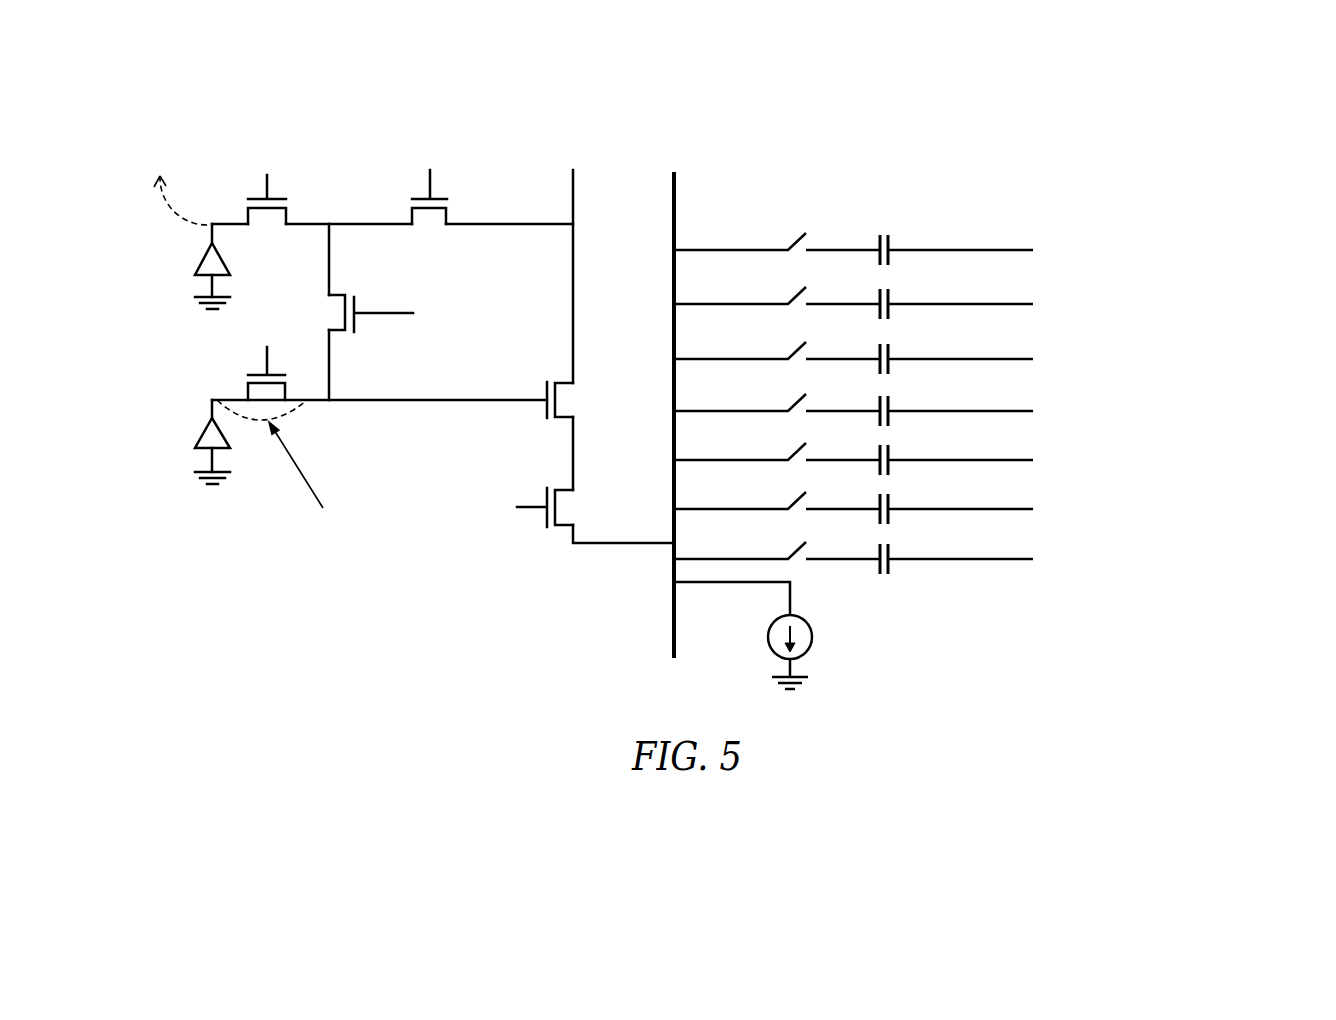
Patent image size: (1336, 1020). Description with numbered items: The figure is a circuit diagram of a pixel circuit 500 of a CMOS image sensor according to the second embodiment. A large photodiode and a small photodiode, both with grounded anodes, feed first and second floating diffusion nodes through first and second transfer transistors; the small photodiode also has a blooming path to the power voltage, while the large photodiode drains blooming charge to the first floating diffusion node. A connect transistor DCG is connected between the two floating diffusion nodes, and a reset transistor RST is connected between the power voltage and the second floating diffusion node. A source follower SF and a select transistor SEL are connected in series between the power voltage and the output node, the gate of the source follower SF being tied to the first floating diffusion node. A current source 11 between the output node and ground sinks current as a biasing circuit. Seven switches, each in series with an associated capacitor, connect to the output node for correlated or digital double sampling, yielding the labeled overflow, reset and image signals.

The pixel circuit 500 is at (106, 133).
The current source 11 is at (812, 637).
The reset transistor RST is at (430, 181).
The connect transistor DCG is at (385, 305).
The source follower transistor SF is at (576, 400).
The select transistor SEL is at (529, 500).